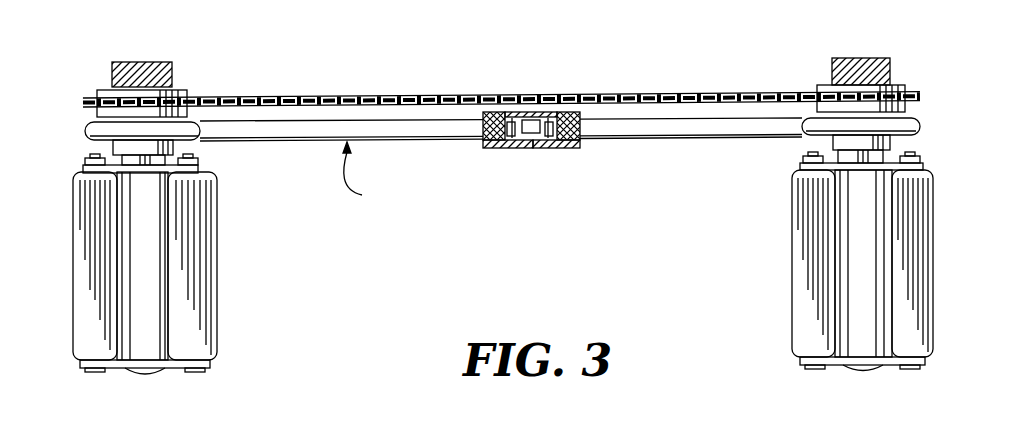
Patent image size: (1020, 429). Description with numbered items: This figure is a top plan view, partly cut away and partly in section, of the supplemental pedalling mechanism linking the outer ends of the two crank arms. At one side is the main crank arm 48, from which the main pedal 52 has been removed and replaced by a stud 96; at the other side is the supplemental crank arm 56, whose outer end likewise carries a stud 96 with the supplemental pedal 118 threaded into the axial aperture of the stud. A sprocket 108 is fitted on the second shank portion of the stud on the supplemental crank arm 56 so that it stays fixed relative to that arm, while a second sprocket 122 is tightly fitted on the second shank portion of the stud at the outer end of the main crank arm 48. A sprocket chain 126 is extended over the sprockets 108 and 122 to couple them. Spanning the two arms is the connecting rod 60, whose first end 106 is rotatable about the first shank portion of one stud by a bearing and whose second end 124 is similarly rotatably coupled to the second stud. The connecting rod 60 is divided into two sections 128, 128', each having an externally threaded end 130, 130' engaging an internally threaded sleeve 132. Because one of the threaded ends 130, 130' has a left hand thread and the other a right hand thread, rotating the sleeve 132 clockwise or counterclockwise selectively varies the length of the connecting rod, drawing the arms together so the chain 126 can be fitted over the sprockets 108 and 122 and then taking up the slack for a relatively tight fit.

The main crank arm 48 is at (852, 58).
The main pedal 52 is at (792, 318).
The supplemental crank arm 56 is at (173, 62).
The connecting rod 60 is at (369, 177).
The stud 96 is at (173, 147).
The connecting rod end 106 is at (85, 128).
The sprocket 108 is at (86, 100).
The supplemental pedal 118 is at (215, 262).
The second sprocket 122 is at (917, 97).
The second end of connecting rod 124 is at (921, 120).
The sprocket chain 126 is at (627, 96).
The connecting rod section 128 is at (341, 103).
The connecting rod section 128' is at (691, 102).
The externally threaded end 130 is at (508, 155).
The externally threaded end 130' is at (586, 151).
The internally threaded sleeve 132 is at (533, 112).